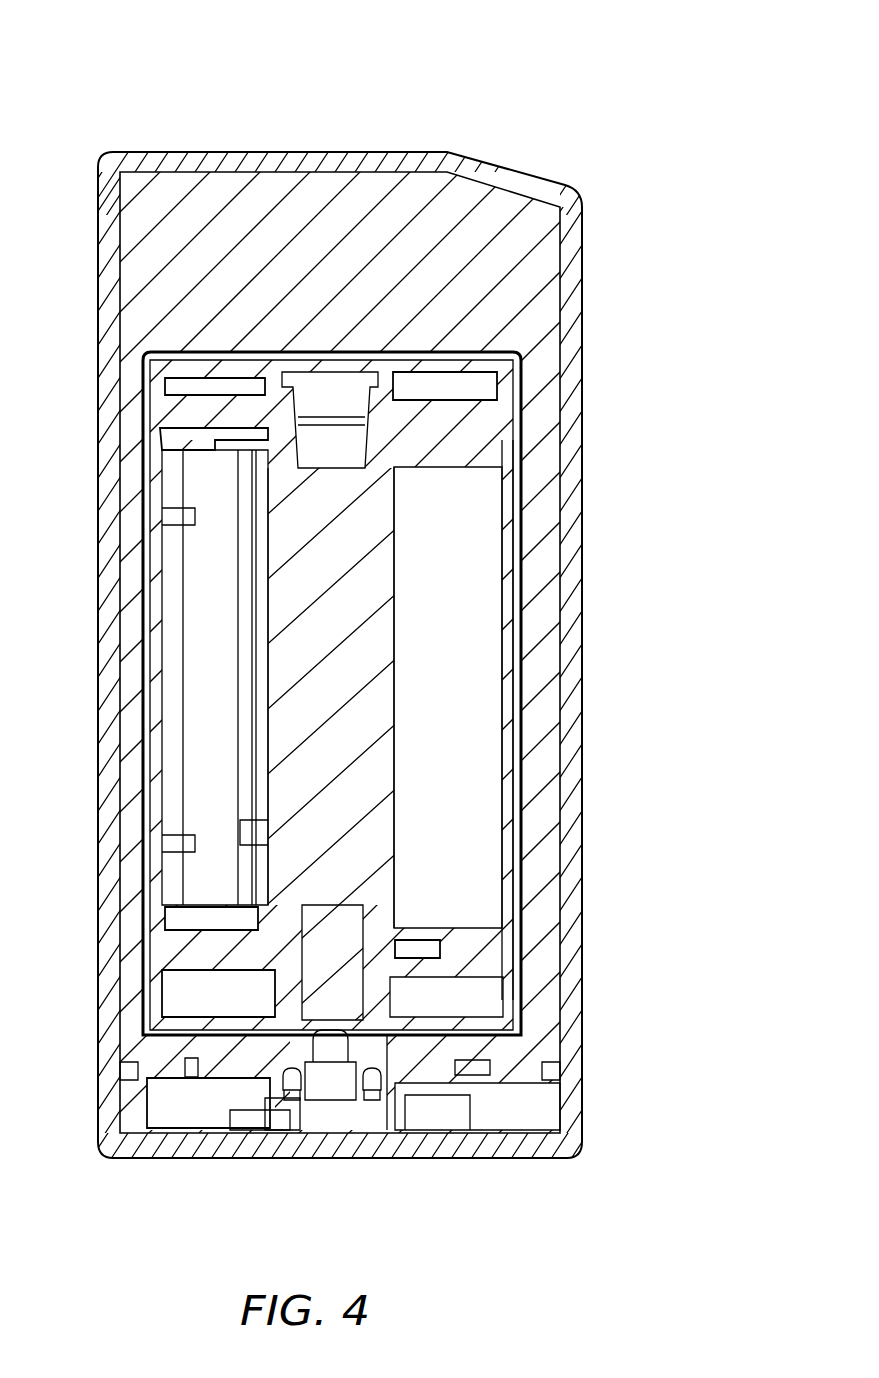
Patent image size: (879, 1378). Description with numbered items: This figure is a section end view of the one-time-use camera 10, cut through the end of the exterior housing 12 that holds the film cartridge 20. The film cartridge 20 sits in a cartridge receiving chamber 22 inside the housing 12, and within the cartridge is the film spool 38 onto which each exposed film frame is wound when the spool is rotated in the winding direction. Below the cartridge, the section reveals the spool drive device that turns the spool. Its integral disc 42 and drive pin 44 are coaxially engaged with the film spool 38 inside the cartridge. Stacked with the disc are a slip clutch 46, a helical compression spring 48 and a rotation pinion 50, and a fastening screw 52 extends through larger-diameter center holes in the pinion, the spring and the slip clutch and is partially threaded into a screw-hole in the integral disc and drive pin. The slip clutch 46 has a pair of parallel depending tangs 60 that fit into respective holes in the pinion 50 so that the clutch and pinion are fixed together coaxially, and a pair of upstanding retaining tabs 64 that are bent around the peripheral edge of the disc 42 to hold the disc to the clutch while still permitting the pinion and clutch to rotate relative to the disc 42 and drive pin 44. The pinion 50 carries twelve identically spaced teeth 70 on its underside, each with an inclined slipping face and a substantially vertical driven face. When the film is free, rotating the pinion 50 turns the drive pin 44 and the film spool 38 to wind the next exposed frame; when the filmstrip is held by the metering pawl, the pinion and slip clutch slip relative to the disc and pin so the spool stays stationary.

The one-time-use camera 10 is at (526, 106).
The exterior housing 12 is at (100, 152).
The film cartridge 20 is at (512, 357).
The cartridge receiving chamber 22 is at (505, 540).
The film spool 38 is at (383, 637).
The drive pin 44 is at (332, 918).
The helical compression spring 48 is at (368, 1078).
The retaining tabs 64 is at (195, 1060).
The slip clutch 46 is at (223, 1100).
The teeth 70 is at (223, 1128).
The rotation pinion 50 is at (233, 1113).
The depending tangs 60 is at (287, 1092).
The fastening screw 52 is at (332, 1110).
The integral disc 42 is at (452, 1073).